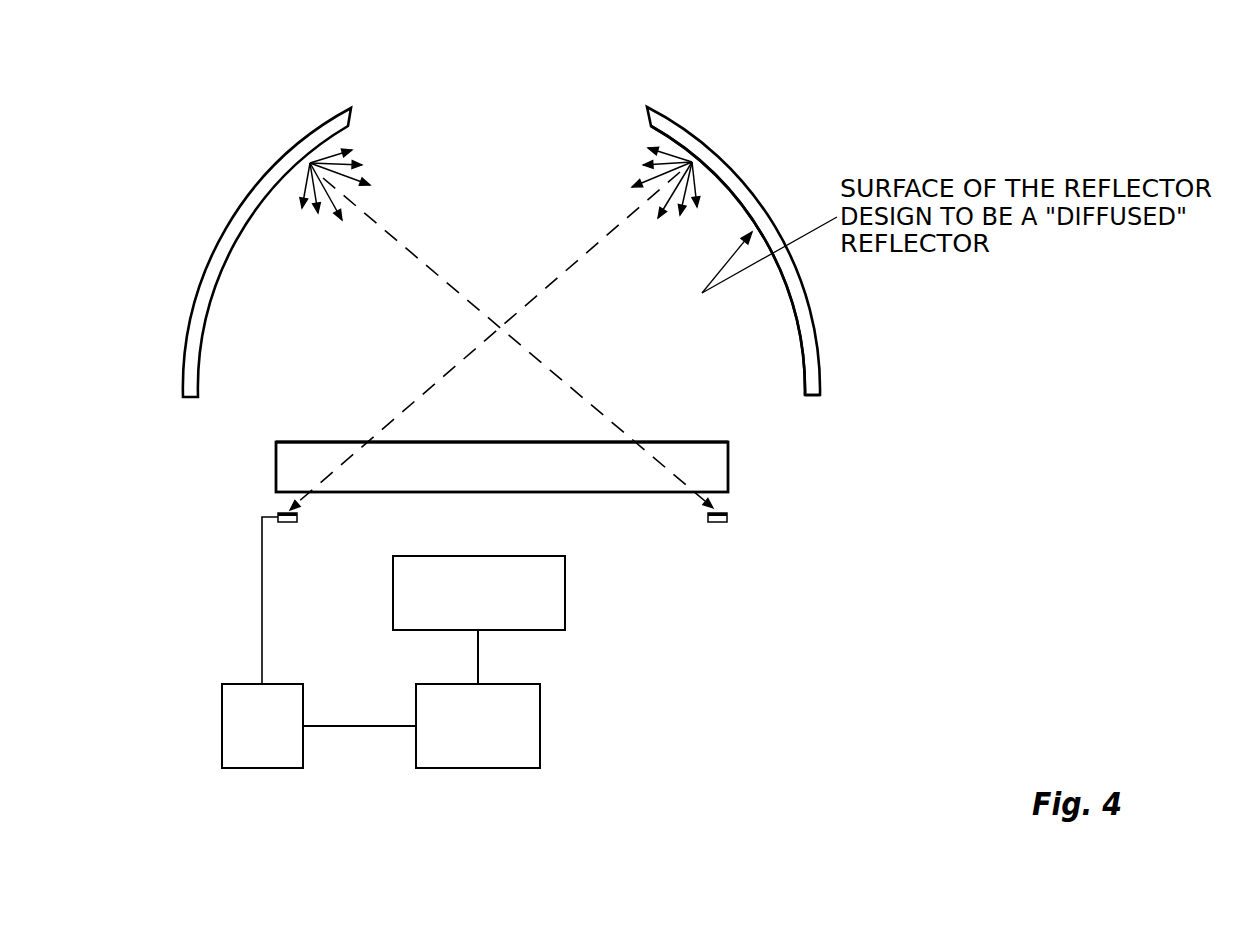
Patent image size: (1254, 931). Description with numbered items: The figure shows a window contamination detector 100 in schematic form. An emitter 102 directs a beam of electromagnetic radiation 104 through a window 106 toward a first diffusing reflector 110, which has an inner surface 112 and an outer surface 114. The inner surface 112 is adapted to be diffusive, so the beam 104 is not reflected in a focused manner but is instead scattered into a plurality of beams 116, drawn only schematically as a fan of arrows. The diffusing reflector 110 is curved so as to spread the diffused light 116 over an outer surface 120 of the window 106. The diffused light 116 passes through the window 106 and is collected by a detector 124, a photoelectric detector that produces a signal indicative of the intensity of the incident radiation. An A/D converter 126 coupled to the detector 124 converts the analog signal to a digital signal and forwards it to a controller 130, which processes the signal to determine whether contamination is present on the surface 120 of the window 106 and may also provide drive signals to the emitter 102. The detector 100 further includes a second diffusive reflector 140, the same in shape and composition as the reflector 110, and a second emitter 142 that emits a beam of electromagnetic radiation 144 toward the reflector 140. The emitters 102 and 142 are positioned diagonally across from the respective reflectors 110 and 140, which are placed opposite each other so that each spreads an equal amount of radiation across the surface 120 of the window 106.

The window contamination detector 100 is at (490, 88).
The emitter 102 is at (300, 526).
The beam of electromagnetic radiation 104 is at (447, 373).
The window 106 is at (730, 463).
The first diffusing reflector 110 is at (747, 177).
The inner surface 112 is at (800, 335).
The outer surface 114 is at (822, 380).
The plurality of beams (diffused light) 116 is at (643, 165).
The outer surface of the window 120 is at (672, 438).
The detector 124 is at (565, 590).
The A/D converter 126 is at (540, 717).
The controller 130 is at (263, 769).
The second diffusive reflector 140 is at (323, 123).
The second emitter 142 is at (730, 526).
The beam of electromagnetic radiation (second) 144 is at (583, 397).